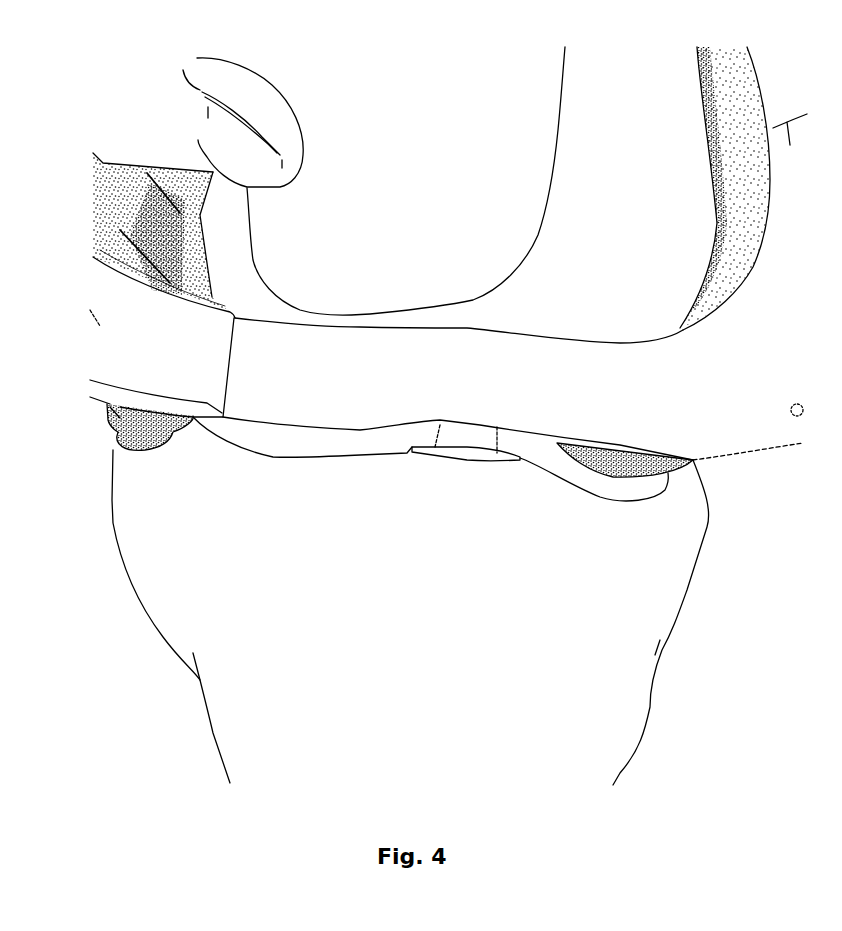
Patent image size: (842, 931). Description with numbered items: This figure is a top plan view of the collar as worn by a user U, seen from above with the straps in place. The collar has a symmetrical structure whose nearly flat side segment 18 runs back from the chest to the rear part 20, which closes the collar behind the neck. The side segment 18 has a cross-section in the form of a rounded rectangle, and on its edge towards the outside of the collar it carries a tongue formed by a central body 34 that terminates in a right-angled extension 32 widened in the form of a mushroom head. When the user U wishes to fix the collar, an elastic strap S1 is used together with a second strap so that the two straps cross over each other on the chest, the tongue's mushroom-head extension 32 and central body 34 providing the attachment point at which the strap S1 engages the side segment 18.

The side segment 18 is at (480, 345).
The rear part 20 is at (673, 403).
The right-angled extension 32 is at (465, 457).
The central body 34 is at (480, 427).
The elastic strap S1 is at (312, 442).
The user U is at (488, 165).